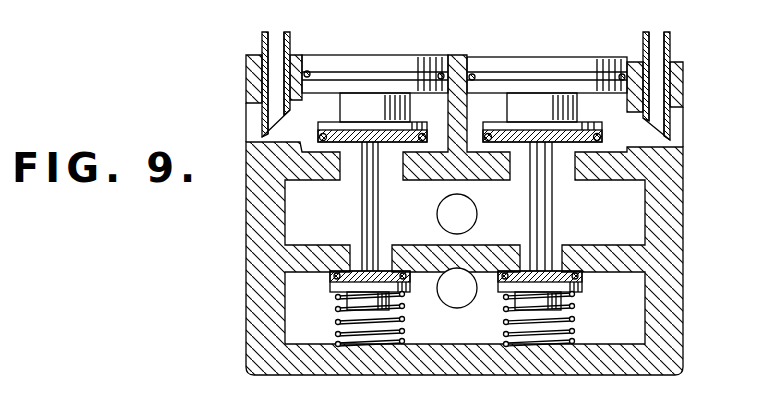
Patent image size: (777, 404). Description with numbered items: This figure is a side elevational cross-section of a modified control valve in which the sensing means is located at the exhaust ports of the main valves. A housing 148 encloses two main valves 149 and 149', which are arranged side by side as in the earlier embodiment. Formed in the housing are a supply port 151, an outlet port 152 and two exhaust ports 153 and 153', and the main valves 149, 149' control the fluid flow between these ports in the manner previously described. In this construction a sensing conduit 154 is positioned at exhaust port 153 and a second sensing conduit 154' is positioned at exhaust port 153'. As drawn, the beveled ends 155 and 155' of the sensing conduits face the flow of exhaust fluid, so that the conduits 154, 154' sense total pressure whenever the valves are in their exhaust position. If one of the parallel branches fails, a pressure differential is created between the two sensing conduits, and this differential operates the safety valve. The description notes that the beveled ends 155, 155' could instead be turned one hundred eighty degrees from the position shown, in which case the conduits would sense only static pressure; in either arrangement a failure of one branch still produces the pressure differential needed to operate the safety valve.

The housing 148 is at (672, 218).
The main valve 149 is at (338, 206).
The main valve 149' is at (567, 206).
The supply port 151 is at (457, 288).
The outlet port 152 is at (457, 214).
The exhaust port 153 is at (216, 122).
The exhaust port 153' is at (713, 127).
The sensing conduit 154 is at (301, 77).
The sensing conduit 154' is at (686, 86).
The beveled end 155 is at (356, 120).
The beveled end 155' is at (570, 133).